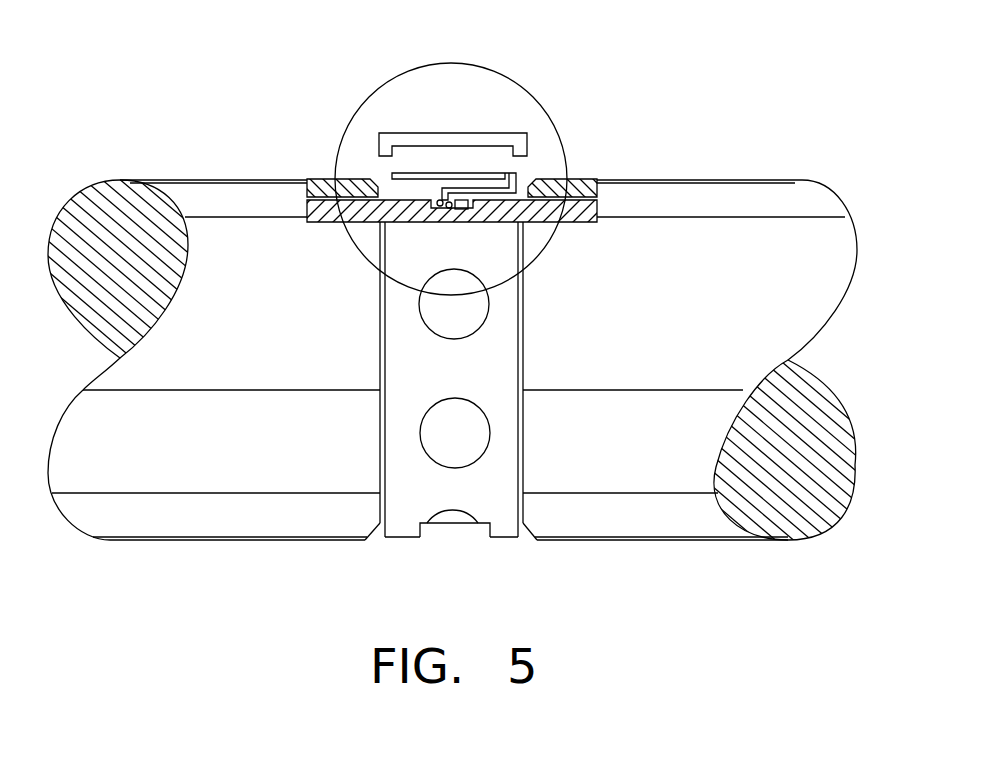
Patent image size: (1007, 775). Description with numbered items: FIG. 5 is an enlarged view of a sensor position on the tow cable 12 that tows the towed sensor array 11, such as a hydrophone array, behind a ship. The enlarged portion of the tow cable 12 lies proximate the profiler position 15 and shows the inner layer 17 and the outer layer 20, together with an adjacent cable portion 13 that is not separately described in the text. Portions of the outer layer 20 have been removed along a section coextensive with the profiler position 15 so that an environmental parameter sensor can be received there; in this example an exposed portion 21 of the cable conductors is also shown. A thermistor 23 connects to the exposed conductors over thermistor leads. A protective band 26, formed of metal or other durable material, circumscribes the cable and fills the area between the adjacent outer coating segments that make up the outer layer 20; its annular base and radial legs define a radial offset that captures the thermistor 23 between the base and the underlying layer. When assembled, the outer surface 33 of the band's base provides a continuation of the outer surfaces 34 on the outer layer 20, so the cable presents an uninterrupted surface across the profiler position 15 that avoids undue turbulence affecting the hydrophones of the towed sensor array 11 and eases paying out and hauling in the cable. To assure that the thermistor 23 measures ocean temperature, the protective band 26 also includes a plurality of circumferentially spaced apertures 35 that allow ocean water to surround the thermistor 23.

The towed sensor array 11 is at (767, 160).
The tow cable 12 is at (826, 483).
The upper tube 13 is at (715, 197).
The profiler position 15 is at (451, 540).
The inner layer 17 is at (596, 223).
The outer layer 20 is at (344, 189).
The exposed conductor portion 21 is at (437, 208).
The thermistor 23 is at (337, 222).
The protective band 26 is at (503, 494).
The outer surface of the base 33 is at (417, 133).
The outer surfaces of the outer layer 34 is at (318, 181).
The circumferentially spaced apertures 35 is at (442, 315).